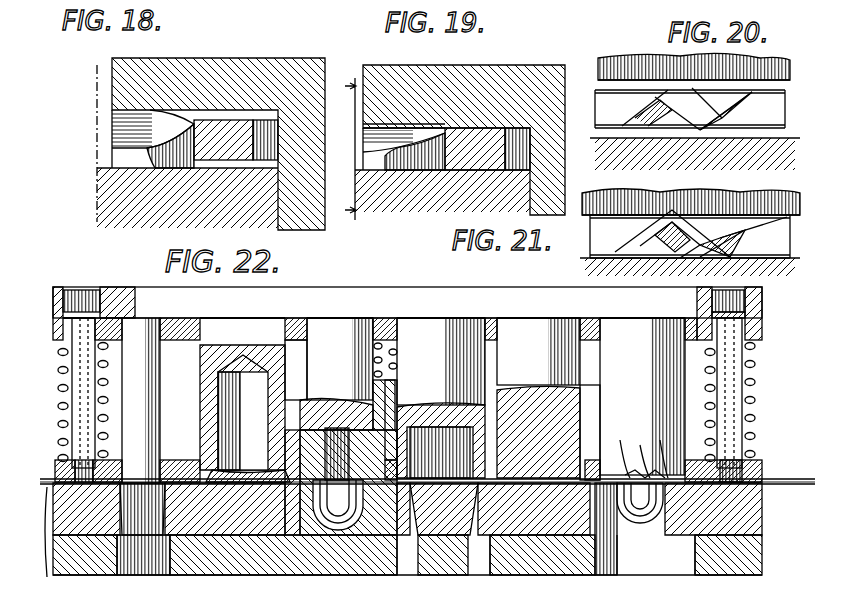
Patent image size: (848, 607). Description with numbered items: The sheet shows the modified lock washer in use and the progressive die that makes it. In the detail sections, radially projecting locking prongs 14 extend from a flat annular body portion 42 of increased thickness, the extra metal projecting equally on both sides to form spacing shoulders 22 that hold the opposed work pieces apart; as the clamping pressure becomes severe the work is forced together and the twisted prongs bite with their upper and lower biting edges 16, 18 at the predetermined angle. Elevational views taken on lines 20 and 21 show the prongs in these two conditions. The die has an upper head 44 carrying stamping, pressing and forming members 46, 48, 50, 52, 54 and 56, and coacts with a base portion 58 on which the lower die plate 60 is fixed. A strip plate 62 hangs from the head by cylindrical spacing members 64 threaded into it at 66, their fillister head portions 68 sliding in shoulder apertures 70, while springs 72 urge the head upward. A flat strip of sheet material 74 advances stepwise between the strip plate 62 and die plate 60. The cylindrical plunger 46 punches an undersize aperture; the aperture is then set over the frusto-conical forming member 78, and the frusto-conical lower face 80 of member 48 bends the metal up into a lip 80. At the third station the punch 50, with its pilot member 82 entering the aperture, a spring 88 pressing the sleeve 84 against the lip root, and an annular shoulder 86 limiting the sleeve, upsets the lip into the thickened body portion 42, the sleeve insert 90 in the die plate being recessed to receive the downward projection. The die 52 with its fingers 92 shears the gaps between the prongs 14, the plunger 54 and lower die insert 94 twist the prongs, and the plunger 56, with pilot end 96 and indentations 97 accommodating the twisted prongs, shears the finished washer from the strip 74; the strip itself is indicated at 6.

In FIG. 22, the workpiece strip 6 is at (426, 429).
In FIG. 18, the locking prongs 14 is at (130, 130).
In FIG. 19, the locking prongs 14 is at (368, 150).
In FIG. 20, the locking prongs 14 is at (680, 93).
In FIG. 18, the upper biting edge 16 is at (110, 107).
In FIG. 21, the upper biting edge 16 is at (690, 230).
In FIG. 21, the lower biting edge 18 is at (720, 268).
In FIG. 18, the section line 20— 20 is at (92, 89).
In FIG. 19, the section line 21— 21 is at (329, 150).
In FIG. 18, the spacing shoulders 22 is at (174, 108).
In FIG. 19, the spacing shoulders 22 is at (436, 127).
In FIG. 18, the body portion 42 is at (224, 132).
In FIG. 19, the body portion 42 is at (483, 128).
In FIG. 20, the body portion 42 is at (600, 138).
In FIG. 21, the body portion 42 is at (765, 218).
In FIG. 22, the upper head 44 is at (380, 300).
In FIG. 22, the cylindrical plunger 46 is at (140, 318).
In FIG. 22, the upper die forming member 48 is at (233, 330).
In FIG. 22, the punch die 50 is at (327, 412).
In FIG. 22, the die 52 is at (432, 330).
In FIG. 22, the die plunger 54 is at (515, 330).
In FIG. 22, the die plunger 56 is at (620, 330).
In FIG. 22, the base portion 58 is at (200, 560).
In FIG. 22, the lower die plate 60 is at (188, 520).
In FIG. 22, the strip plate 62 is at (732, 464).
In FIG. 22, the cylindrical spacing members 64 is at (88, 384).
In FIG. 22, the threaded engagement 66 is at (92, 465).
In FIG. 22, the fillister head portions 68 is at (745, 318).
In FIG. 22, the shoulder aperture 70 is at (78, 297).
In FIG. 22, the springs 72 is at (104, 400).
In FIG. 22, the strip of sheet material 74 is at (62, 560).
In FIG. 22, the forming member 78 is at (243, 465).
In FIG. 22, the lower face / frusto-conical lip 80 is at (216, 472).
In FIG. 22, the pilot member 82 is at (342, 508).
In FIG. 22, the sleeve 84 is at (388, 405).
In FIG. 22, the annular shoulder 86 is at (355, 403).
In FIG. 22, the spring 88 is at (300, 338).
In FIG. 22, the sleeve insert 90 is at (308, 527).
In FIG. 22, the fingers 92 is at (496, 395).
In FIG. 22, the lower die insert 94 is at (555, 525).
In FIG. 22, the pilot end 96 is at (645, 520).
In FIG. 22, the indentations 97 is at (630, 470).